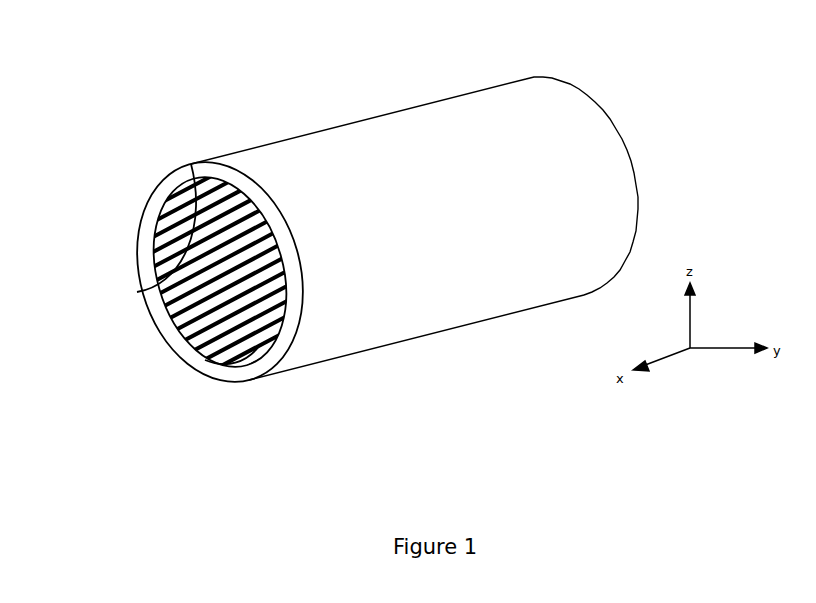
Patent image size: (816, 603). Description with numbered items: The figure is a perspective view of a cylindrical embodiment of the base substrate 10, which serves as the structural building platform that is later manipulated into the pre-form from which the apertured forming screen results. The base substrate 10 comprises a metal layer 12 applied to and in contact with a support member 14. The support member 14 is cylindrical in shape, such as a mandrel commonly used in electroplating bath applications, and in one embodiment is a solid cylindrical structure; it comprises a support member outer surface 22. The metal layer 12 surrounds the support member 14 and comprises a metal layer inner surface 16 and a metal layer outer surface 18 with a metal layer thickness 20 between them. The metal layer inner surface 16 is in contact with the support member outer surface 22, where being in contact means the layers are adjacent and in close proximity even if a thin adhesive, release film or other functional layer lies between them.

The base substrate 10 is at (152, 77).
The metal layer 12 is at (177, 355).
The support member 14 is at (212, 294).
The metal layer inner surface 16 is at (229, 356).
The metal layer outer surface 18 is at (312, 310).
The metal layer thickness 20 is at (148, 275).
The support member outer surface 22 is at (153, 220).